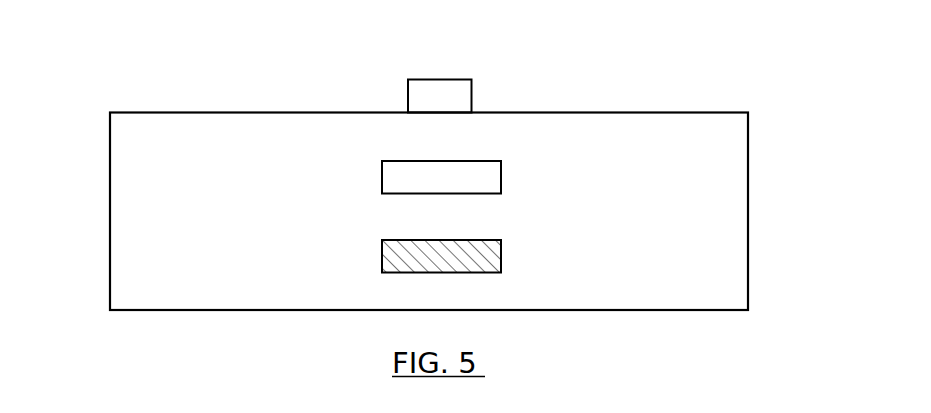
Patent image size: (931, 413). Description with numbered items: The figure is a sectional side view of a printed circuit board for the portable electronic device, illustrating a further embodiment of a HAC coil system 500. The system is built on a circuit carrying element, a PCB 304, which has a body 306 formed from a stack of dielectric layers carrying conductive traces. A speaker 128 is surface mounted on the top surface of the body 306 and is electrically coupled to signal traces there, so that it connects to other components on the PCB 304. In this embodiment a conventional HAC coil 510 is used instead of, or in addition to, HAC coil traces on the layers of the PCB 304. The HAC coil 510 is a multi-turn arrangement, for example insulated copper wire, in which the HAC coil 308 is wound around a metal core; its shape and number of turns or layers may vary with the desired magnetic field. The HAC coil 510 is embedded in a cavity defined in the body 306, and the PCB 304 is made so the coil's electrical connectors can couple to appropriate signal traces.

The HAC coil system 500 is at (702, 64).
The PCB 304 is at (703, 112).
The body 306 is at (727, 139).
The speaker 128 is at (438, 78).
The HAC coil 308 is at (501, 163).
The HAC coil 510 is at (501, 255).